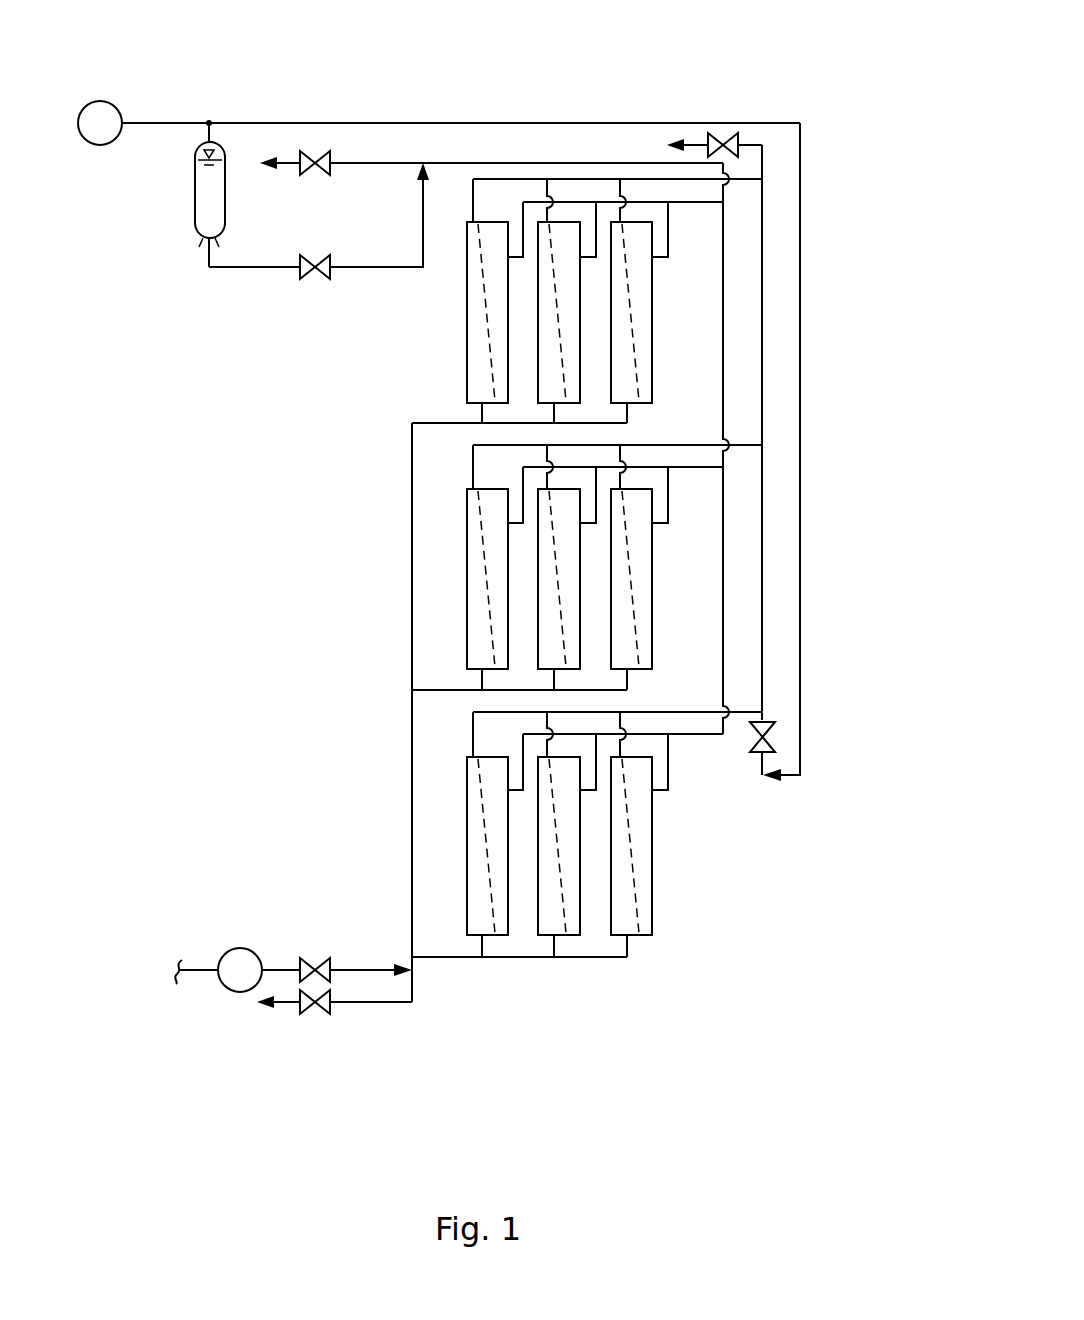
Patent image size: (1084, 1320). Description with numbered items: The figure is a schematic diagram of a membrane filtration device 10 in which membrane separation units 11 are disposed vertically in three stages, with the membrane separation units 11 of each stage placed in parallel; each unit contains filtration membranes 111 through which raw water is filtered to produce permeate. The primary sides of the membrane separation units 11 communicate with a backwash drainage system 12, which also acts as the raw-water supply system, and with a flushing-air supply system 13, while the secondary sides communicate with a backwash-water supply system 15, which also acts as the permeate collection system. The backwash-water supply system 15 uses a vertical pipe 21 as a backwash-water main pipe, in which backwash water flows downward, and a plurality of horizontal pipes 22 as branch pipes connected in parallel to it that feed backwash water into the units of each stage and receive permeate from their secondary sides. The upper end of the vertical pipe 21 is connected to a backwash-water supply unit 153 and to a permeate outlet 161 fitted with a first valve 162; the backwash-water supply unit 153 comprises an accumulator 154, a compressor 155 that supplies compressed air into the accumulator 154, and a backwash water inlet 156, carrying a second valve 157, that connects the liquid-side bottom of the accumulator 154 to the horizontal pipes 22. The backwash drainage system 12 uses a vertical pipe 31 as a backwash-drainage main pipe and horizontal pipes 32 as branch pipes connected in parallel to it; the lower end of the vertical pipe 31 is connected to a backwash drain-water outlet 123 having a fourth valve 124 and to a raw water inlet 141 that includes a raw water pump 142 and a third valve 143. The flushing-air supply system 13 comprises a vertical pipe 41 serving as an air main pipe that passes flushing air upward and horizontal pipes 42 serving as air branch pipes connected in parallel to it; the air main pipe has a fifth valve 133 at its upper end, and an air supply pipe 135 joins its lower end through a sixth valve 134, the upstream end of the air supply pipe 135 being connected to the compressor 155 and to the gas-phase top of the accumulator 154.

The membrane filtration device 10 is at (540, 84).
The membrane separation unit 11 is at (587, 578).
The filtration membrane 111 is at (563, 640).
The backwash drainage system 12 is at (401, 734).
The flushing-air supply system 13 is at (700, 405).
The backwash-water supply system 15 is at (458, 160).
The vertical pipe 21 is at (722, 305).
The horizontal pipe 22 is at (713, 200).
The vertical pipe 31 is at (411, 568).
The horizontal pipe 32 is at (423, 424).
The vertical pipe 41 is at (763, 655).
The horizontal pipe 42 is at (603, 178).
The backwash drain-water outlet 123 is at (382, 1004).
The fourth valve 124 is at (312, 1014).
The fifth valve 133 is at (725, 140).
The sixth valve 134 is at (770, 737).
The air supply pipe 135 is at (801, 588).
The raw water inlet 141 is at (370, 968).
The raw water pump 142 is at (240, 948).
The third valve 143 is at (315, 958).
The backwash-water supply unit 153 is at (250, 272).
The accumulator 154 is at (196, 238).
The compressor 155 is at (118, 104).
The backwash water inlet 156 is at (360, 268).
The second valve 157 is at (312, 280).
The permeate outlet 161 is at (372, 160).
The first valve 162 is at (310, 150).